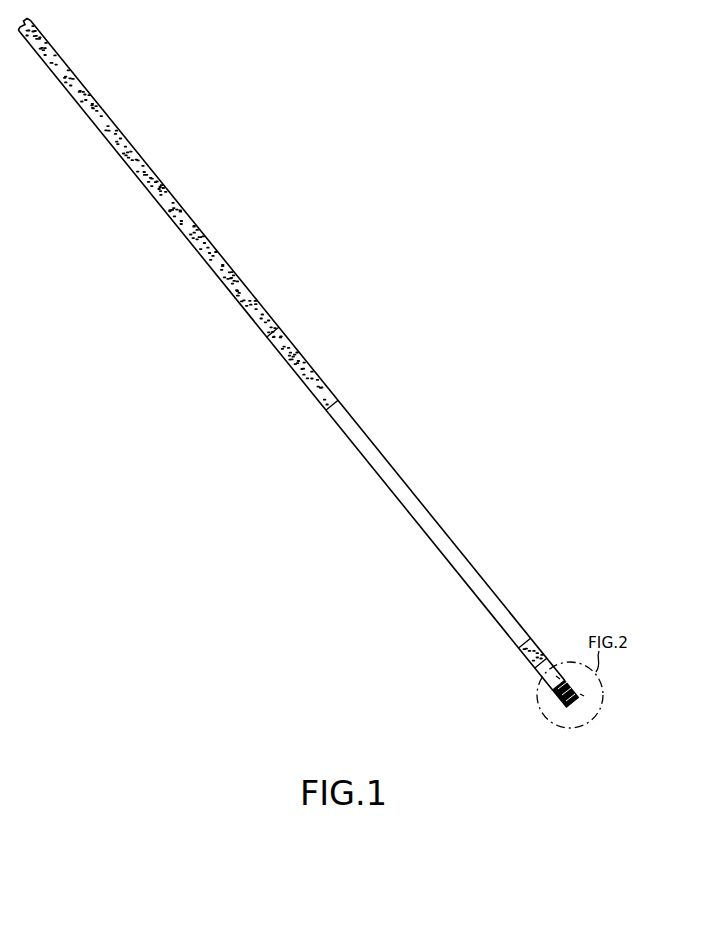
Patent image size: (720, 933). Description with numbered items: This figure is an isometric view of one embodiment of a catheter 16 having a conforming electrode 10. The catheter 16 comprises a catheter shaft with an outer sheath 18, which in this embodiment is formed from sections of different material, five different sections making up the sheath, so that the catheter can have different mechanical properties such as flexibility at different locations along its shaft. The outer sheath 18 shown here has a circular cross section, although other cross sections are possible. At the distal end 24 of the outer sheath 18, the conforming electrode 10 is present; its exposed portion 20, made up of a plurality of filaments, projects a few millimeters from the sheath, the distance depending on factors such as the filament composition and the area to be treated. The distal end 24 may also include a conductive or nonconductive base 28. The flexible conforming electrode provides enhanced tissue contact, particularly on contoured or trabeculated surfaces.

The conforming electrode 10 is at (556, 707).
The catheter 16 is at (376, 310).
The outer sheath 18 is at (343, 434).
The exposed portion 20 is at (592, 694).
The distal end 24 is at (561, 697).
The base 28 is at (560, 678).